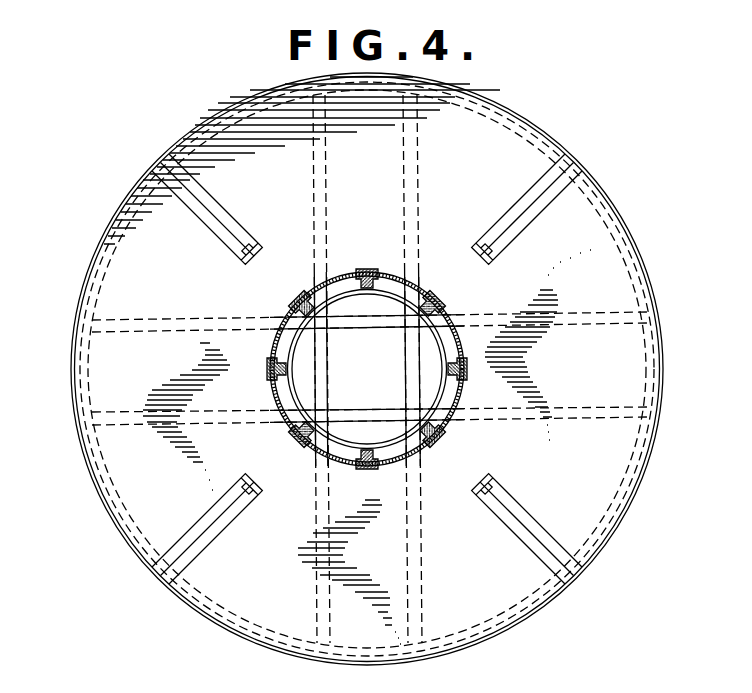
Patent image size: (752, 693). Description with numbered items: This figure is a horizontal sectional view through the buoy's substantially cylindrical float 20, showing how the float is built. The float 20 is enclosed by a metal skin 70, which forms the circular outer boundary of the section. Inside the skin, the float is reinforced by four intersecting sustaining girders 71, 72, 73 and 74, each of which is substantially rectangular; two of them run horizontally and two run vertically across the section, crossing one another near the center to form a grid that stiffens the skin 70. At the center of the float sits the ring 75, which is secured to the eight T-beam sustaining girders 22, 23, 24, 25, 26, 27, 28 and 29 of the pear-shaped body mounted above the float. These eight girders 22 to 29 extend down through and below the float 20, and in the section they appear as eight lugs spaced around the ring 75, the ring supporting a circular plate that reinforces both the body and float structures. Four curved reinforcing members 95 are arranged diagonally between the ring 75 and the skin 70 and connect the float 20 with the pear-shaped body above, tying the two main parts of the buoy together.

The metal skin 70 is at (660, 376).
The float 20 is at (608, 184).
The sustaining girder 71 is at (137, 427).
The sustaining girder 72 is at (175, 333).
The sustaining girder 73 is at (327, 217).
The sustaining girder 74 is at (419, 218).
The ring 75 is at (338, 301).
The sustaining girder 22 is at (366, 462).
The sustaining girder 23 is at (430, 432).
The sustaining girder 24 is at (464, 372).
The sustaining girder 25 is at (425, 315).
The sustaining girder 26 is at (367, 272).
The sustaining girder 27 is at (309, 306).
The sustaining girder 28 is at (283, 372).
The sustaining girder 29 is at (305, 433).
The curved reinforcing member 95 is at (217, 210).